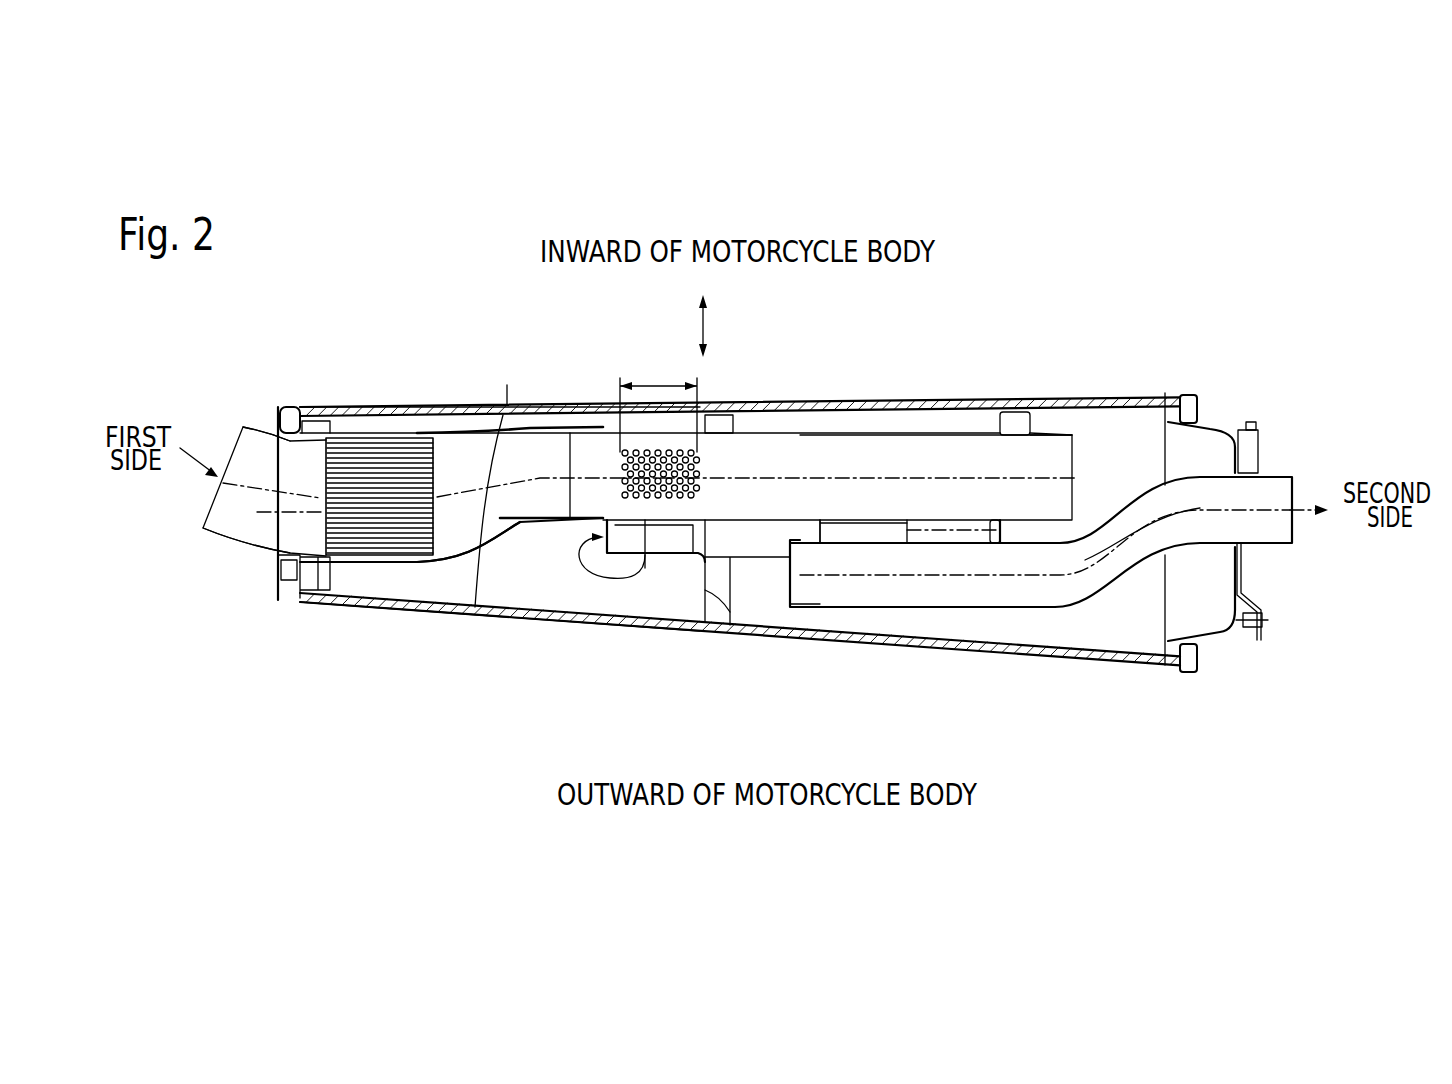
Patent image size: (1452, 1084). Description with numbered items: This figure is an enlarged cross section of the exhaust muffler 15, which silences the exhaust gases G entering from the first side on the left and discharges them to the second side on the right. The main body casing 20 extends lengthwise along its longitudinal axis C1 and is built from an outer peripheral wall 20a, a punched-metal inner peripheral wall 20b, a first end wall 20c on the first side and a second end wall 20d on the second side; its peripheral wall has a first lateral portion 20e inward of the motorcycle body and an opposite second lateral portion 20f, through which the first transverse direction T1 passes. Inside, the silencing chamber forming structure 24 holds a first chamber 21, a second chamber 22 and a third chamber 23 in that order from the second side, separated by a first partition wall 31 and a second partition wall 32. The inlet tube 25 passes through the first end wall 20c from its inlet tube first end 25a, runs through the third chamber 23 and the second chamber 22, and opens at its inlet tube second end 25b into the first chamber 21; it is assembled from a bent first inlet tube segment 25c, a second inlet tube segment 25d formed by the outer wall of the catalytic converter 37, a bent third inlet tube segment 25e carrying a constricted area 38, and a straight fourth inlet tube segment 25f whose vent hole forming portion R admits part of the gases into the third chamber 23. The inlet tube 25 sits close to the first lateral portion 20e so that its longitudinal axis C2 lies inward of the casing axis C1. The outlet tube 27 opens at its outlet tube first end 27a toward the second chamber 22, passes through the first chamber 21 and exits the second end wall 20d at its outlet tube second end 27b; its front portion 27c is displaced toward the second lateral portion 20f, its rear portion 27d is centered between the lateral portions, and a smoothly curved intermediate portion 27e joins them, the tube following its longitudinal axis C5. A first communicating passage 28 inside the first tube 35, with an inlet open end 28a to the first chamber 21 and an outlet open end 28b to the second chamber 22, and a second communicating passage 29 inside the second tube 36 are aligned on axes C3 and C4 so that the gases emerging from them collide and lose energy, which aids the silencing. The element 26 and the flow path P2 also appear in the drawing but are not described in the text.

The exhaust muffler 15 is at (777, 364).
The main body casing 20 is at (473, 333).
The outer peripheral wall 20a is at (395, 407).
The inner peripheral wall 20b is at (444, 407).
The first end wall 20c is at (290, 425).
The second end wall 20d is at (1218, 623).
The first lateral portion 20e is at (735, 407).
The second lateral portion 20f is at (717, 628).
The first chamber 21 is at (1118, 435).
The second chamber 22 is at (936, 433).
The third chamber 23 is at (676, 592).
The silencing chamber forming structure 24 is at (534, 572).
The inlet tube 25 is at (815, 407).
The inlet tube first end 25a is at (235, 447).
The inlet tube second end 25b is at (1090, 410).
The first inlet tube segment 25c is at (237, 538).
The second inlet tube segment 25d is at (392, 565).
The third inlet tube segment 25e is at (478, 545).
The fourth inlet tube segment 25f is at (813, 527).
The liner 26 is at (558, 426).
The outlet tube 27 is at (920, 608).
The outlet tube first end 27a is at (828, 565).
The outlet tube second end 27b is at (1260, 470).
The front portion 27c is at (858, 530).
The rear portion 27d is at (1310, 545).
The intermediate portion 27e is at (1118, 590).
The first communicating passage 28 is at (928, 537).
The inlet open end 28a is at (1178, 433).
The outlet open end 28b is at (903, 527).
The second communicating passage 29 is at (612, 588).
The first partition wall 31 is at (1014, 412).
The second partition wall 32 is at (738, 590).
The first tube 35 is at (1025, 530).
The second tube 36 is at (655, 556).
The catalytic converter 37 is at (362, 537).
The constricted area 38 is at (505, 600).
The longitudinal axis of the main body casing C1 is at (1283, 585).
The longitudinal axis of the inlet tube C2 is at (866, 430).
The axis of the first communicating passage C3 is at (973, 530).
The axis of the second communicating passage C4 is at (782, 545).
The longitudinal axis of the outlet tube C5 is at (1065, 582).
The exhaust gases G is at (193, 460).
The flow path P2 is at (578, 562).
The vent hole forming portion R is at (656, 385).
The first transverse direction T1 is at (703, 325).